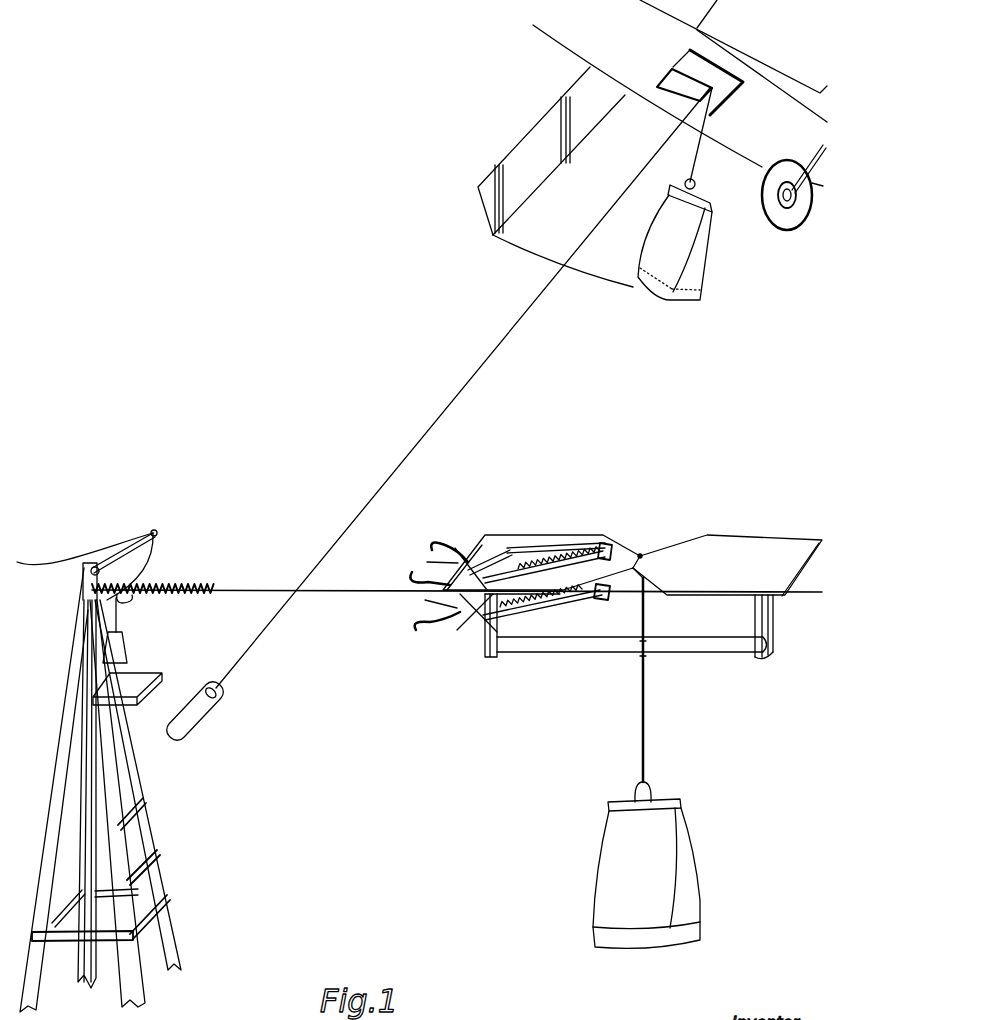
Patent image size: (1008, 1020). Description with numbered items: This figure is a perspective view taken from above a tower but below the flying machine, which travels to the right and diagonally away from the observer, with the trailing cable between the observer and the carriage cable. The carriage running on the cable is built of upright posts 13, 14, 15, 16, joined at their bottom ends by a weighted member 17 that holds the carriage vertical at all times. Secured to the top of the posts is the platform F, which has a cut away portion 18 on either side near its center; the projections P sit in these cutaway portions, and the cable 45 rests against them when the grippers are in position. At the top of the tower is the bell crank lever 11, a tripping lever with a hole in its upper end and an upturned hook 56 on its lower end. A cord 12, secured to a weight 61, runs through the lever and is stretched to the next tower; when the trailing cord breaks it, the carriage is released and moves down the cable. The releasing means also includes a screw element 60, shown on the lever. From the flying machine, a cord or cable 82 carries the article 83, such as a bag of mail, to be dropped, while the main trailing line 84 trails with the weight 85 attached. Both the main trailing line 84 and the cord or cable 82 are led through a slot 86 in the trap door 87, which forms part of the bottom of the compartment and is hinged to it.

The bell crank lever 11 is at (127, 550).
The cord 12 is at (66, 554).
The upright post 13 is at (485, 635).
The upright post 14 is at (773, 650).
The upright post 15 is at (776, 618).
The upright post 16 is at (505, 625).
The member 17 is at (543, 655).
The cut away portion 18 is at (643, 543).
The cable 45 is at (646, 713).
The upturned hook 56 is at (137, 600).
The screw 60 is at (172, 585).
The weight 61 is at (120, 650).
The cord or cable 82 is at (698, 166).
The article 83 is at (693, 273).
The main trailing line 84 is at (432, 435).
The weight 85 is at (196, 728).
The slot 86 is at (673, 67).
The trap door 87 is at (730, 87).
The platform F is at (733, 540).
The projections P is at (630, 574).